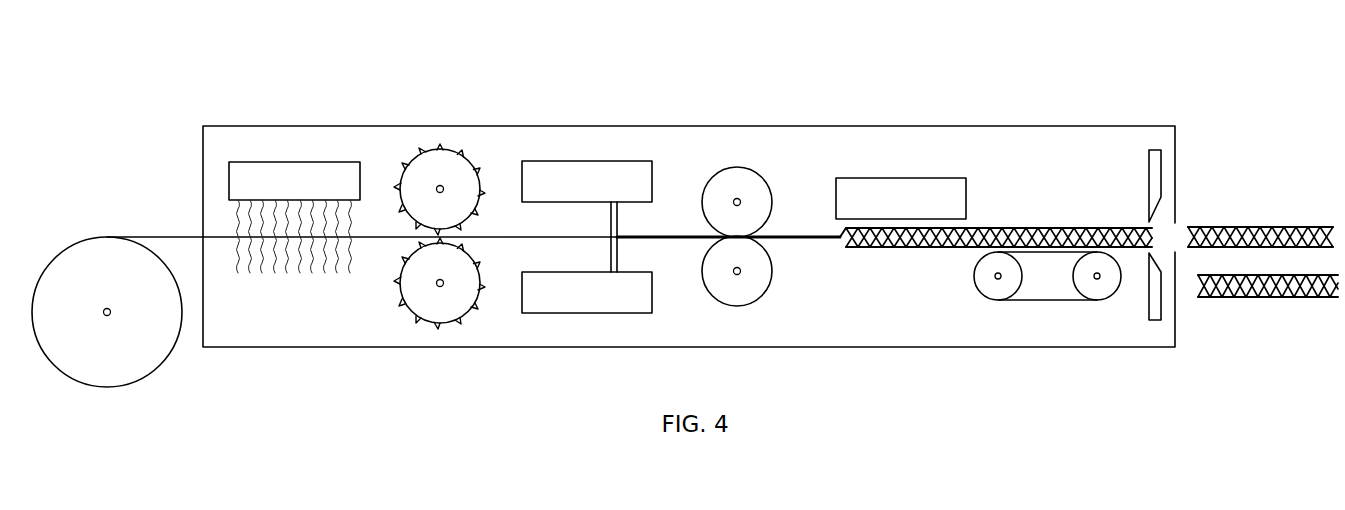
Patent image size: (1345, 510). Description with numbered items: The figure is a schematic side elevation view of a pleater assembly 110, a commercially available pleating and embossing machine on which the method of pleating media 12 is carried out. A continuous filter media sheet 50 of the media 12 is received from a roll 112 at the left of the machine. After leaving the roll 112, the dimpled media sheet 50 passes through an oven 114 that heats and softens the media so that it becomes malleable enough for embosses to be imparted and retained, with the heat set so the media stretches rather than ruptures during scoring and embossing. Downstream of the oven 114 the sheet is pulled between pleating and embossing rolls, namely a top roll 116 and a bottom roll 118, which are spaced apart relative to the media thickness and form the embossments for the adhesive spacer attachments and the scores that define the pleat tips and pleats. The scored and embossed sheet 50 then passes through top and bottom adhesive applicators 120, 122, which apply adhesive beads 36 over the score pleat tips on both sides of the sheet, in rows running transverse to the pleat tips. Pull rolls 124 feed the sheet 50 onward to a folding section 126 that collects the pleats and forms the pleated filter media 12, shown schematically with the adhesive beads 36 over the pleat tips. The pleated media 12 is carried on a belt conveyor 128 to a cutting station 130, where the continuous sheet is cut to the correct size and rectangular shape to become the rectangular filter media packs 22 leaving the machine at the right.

The pleater assembly 110 is at (596, 96).
The roll 112 is at (57, 278).
The filter media sheet 50 is at (152, 233).
The oven 114 is at (249, 170).
The top roll 116 is at (432, 170).
The bottom roll 118 is at (438, 302).
The top adhesive applicator 120 is at (540, 172).
The bottom adhesive applicator 122 is at (560, 302).
The pull rolls 124 is at (752, 185).
The folding section 126 is at (852, 178).
The adhesive beads 36 is at (617, 237).
The cutting station 130 is at (1148, 172).
The media 12 is at (1040, 252).
The belt conveyor 128 is at (1003, 288).
The filter media packs 22 is at (1268, 226).